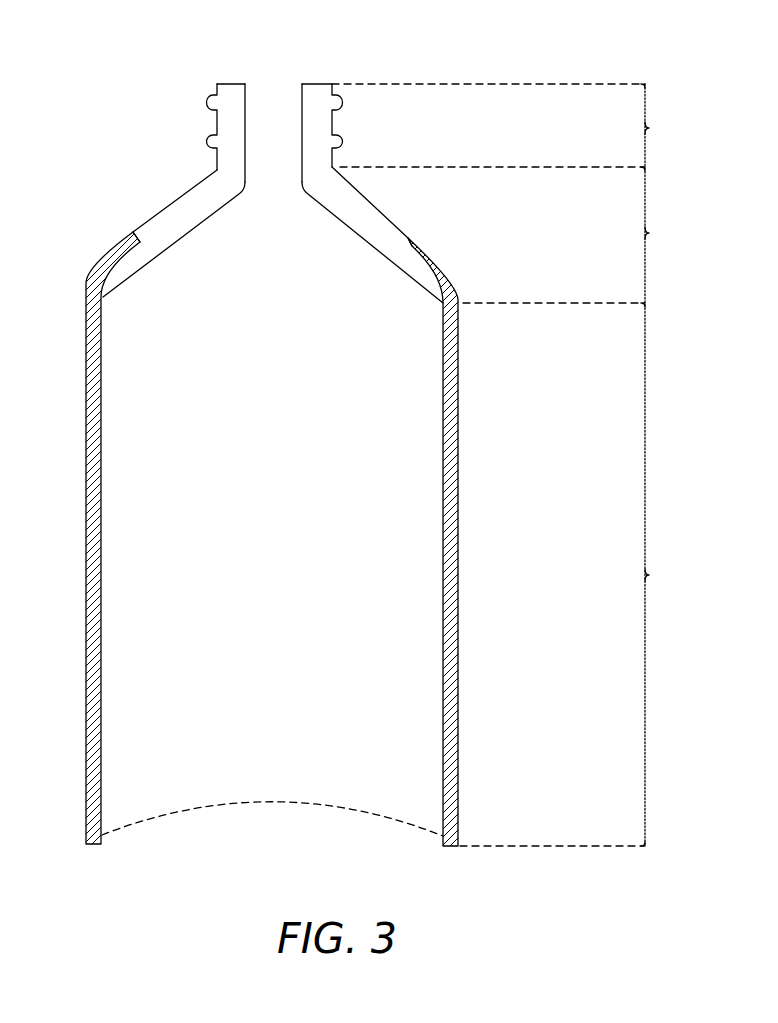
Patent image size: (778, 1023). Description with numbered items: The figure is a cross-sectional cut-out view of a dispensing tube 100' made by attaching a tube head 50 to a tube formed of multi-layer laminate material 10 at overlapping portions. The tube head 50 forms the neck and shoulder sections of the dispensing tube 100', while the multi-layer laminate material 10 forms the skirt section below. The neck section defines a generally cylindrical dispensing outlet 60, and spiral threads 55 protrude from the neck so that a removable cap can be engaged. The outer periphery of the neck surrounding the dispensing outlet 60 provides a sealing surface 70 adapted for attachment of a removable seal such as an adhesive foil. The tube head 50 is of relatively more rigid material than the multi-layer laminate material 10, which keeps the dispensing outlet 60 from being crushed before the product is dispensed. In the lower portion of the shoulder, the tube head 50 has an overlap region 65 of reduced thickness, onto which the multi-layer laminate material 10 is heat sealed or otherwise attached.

The dispensing tube 100' is at (356, 442).
The multi-layer laminate material 10 is at (459, 652).
The tube head 50 is at (352, 217).
The spiral threads 55 is at (207, 141).
The dispensing outlet 60 is at (274, 102).
The overlap region 65 is at (135, 267).
The sealing surface 70 is at (228, 82).